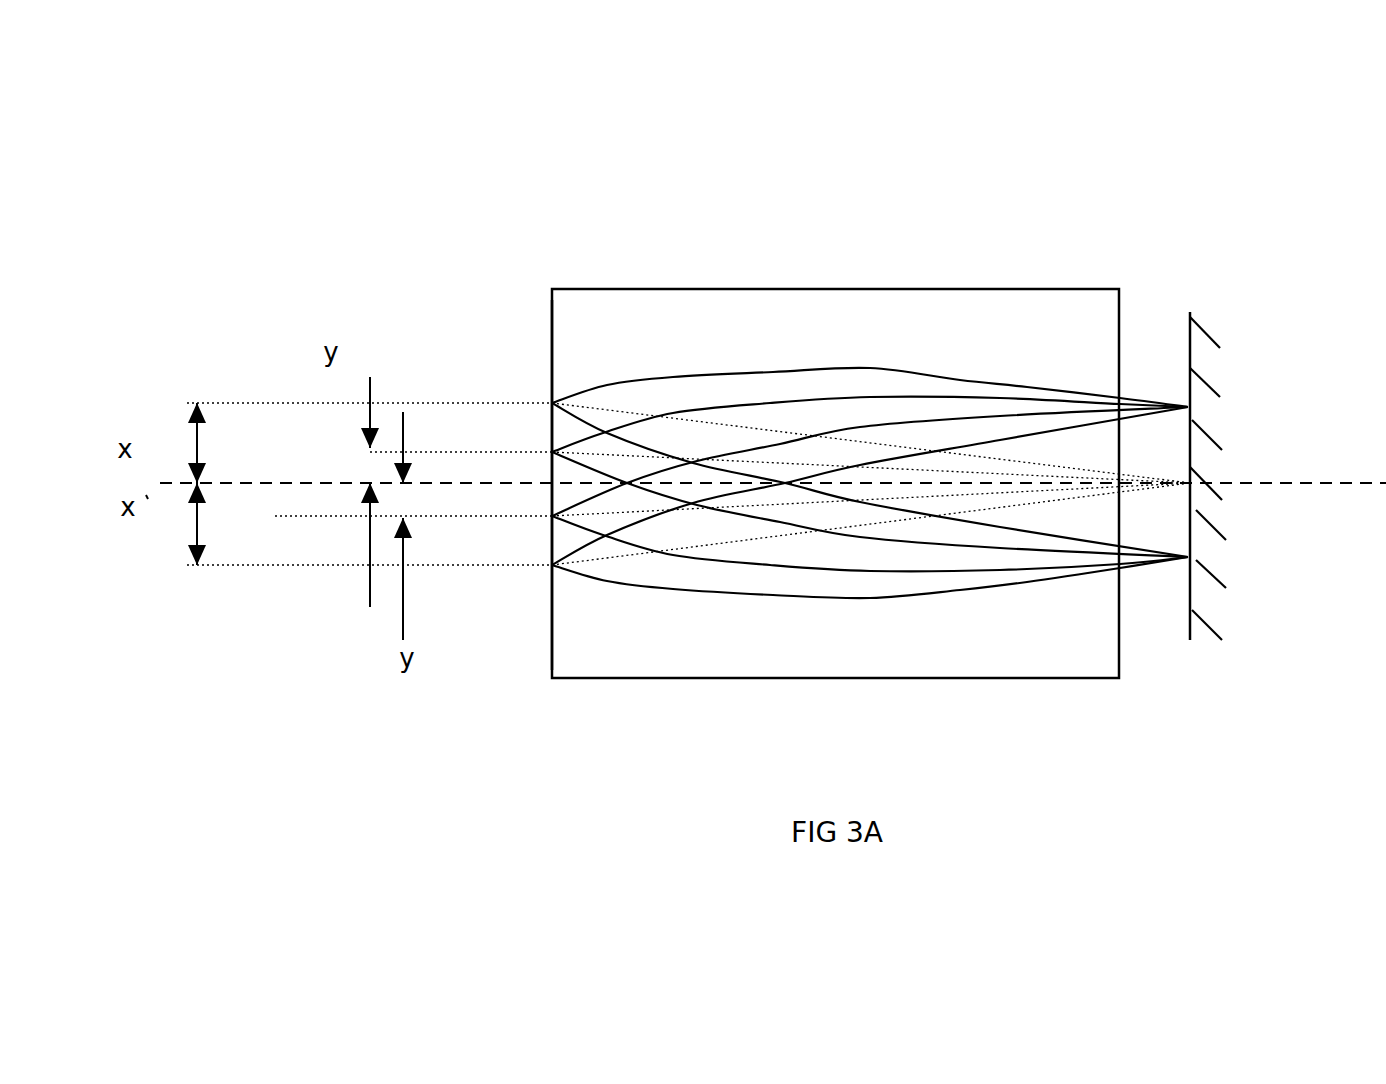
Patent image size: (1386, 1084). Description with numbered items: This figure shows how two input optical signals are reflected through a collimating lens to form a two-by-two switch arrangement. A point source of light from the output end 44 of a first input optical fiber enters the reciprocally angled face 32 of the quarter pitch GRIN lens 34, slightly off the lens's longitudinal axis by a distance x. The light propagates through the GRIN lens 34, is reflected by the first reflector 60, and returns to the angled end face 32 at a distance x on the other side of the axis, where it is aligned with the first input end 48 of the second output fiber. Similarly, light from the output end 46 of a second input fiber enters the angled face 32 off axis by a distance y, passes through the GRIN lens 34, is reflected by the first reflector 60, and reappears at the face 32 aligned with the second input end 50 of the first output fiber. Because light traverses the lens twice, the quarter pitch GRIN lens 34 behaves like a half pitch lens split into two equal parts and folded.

The reciprocally angled face 32 is at (551, 370).
The quarter pitch GRIN lens 34 is at (885, 284).
The output end 44 is at (688, 462).
The output end 46 is at (780, 477).
The first input end 48 is at (688, 502).
The second input end 50 is at (732, 489).
The first reflector 60 is at (1218, 360).